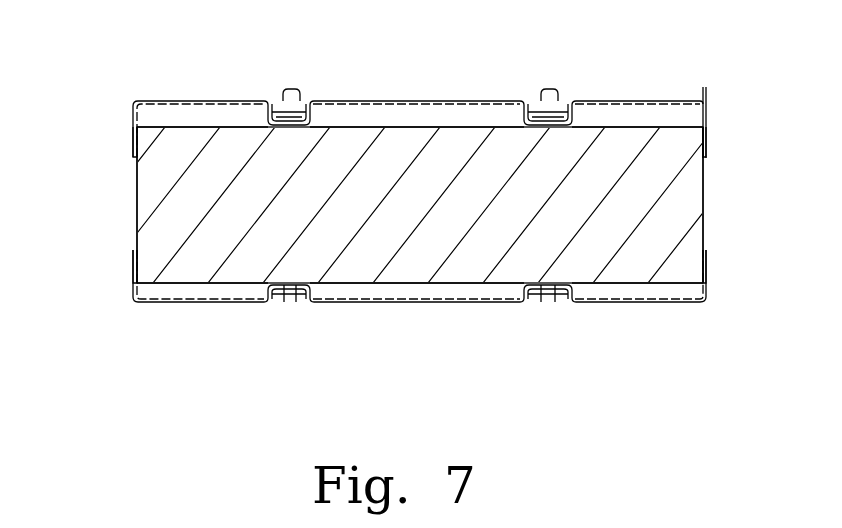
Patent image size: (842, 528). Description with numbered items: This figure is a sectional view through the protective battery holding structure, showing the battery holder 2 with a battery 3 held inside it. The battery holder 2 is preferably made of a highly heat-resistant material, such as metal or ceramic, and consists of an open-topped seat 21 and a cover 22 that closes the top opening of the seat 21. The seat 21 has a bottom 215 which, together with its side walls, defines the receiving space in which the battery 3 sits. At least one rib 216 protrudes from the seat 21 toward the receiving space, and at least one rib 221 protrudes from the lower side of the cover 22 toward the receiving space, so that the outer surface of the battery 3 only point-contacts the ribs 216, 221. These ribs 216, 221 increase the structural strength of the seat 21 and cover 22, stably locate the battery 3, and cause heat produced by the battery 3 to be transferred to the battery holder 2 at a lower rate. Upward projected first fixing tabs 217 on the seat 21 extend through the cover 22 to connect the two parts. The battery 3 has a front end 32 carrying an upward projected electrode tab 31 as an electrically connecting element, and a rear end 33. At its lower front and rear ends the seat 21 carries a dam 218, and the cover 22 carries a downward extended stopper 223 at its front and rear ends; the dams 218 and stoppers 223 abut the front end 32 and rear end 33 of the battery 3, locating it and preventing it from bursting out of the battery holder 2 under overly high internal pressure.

The battery holder 2 is at (412, 218).
The battery 3 is at (632, 266).
The seat 21 is at (412, 333).
The cover 22 is at (415, 85).
The electrode tab 31 is at (706, 97).
The front end 32 is at (703, 183).
The rear end 33 is at (137, 205).
The bottom 215 is at (330, 305).
The rib 216 is at (545, 305).
The first fixing tab 217 is at (549, 89).
The dam 218 is at (134, 272).
The rib 221 is at (548, 119).
The stopper 223 is at (135, 131).